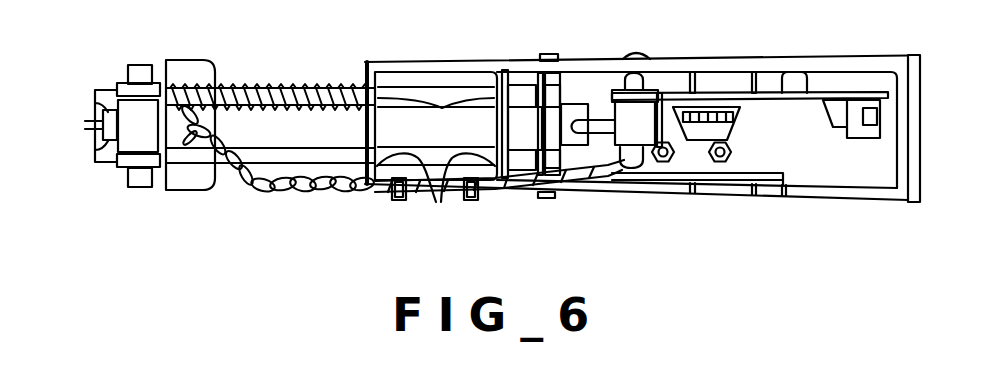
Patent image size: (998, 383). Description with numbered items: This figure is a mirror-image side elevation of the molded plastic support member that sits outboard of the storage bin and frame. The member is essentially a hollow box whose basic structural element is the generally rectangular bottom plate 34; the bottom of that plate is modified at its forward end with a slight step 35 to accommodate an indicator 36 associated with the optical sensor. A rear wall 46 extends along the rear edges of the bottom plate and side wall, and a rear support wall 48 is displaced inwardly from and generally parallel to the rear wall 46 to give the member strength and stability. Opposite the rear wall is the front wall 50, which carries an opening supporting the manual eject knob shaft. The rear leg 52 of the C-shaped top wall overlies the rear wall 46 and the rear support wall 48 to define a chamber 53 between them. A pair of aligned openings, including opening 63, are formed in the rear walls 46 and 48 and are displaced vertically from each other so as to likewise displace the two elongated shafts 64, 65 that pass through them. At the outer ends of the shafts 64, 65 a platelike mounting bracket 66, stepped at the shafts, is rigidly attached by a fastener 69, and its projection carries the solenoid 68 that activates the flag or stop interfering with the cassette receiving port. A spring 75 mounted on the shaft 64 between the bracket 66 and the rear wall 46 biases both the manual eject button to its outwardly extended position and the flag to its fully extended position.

The bottom plate 34 is at (610, 182).
The step 35 is at (643, 195).
The indicator 36 is at (883, 120).
The rear wall 46 is at (366, 74).
The rear support wall 48 is at (505, 80).
The front wall 50 is at (922, 93).
The rear leg 52 is at (422, 62).
The chamber 53 is at (392, 118).
The opening 63 is at (436, 192).
The shaft 64 is at (400, 92).
The shaft 65 is at (266, 155).
The mounting bracket 66 is at (126, 133).
The solenoid 68 is at (193, 70).
The fastener 69 is at (138, 64).
The spring 75 is at (257, 86).